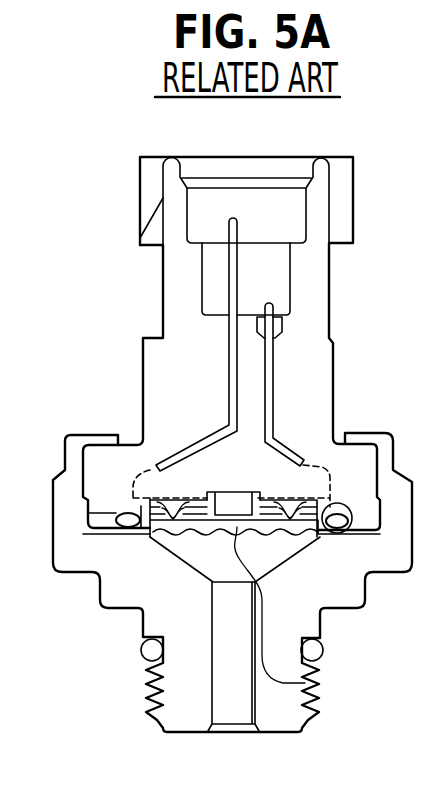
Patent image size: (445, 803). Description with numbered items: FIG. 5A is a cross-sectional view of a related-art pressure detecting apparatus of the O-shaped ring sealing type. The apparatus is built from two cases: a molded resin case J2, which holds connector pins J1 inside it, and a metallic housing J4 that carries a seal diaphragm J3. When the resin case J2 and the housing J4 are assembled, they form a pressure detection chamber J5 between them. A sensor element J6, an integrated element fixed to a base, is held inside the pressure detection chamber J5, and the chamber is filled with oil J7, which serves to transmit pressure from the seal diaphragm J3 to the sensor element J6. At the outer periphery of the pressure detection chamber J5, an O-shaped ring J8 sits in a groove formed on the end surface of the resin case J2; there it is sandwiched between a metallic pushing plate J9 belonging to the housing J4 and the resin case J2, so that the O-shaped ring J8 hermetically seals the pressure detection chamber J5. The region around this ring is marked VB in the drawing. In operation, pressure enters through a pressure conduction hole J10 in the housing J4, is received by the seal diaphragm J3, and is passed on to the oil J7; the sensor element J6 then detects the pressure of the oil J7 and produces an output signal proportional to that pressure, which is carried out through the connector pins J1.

The connector pins J1 is at (229, 372).
The molded resin case J2 is at (318, 378).
The seal diaphragm J3 is at (273, 535).
The metallic housing J4 is at (137, 580).
The pressure detection chamber J5 is at (305, 683).
The sensor element J6 is at (225, 498).
The oil J7 is at (324, 615).
The O-shaped ring J8 is at (127, 522).
The metallic pushing plate J9 is at (93, 535).
The pressure conduction hole J10 is at (225, 673).
The ring seal VB is at (353, 507).